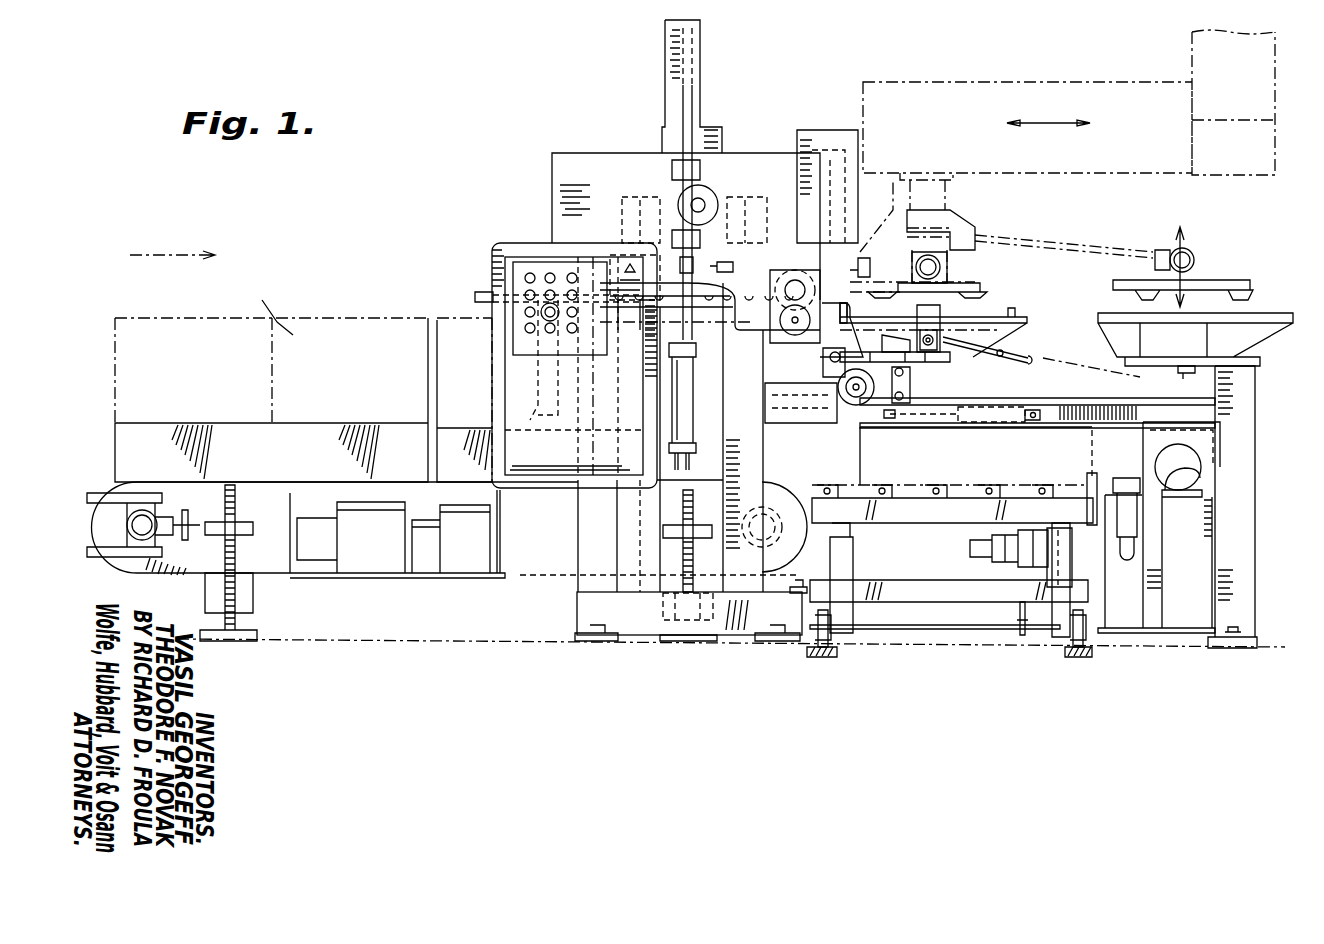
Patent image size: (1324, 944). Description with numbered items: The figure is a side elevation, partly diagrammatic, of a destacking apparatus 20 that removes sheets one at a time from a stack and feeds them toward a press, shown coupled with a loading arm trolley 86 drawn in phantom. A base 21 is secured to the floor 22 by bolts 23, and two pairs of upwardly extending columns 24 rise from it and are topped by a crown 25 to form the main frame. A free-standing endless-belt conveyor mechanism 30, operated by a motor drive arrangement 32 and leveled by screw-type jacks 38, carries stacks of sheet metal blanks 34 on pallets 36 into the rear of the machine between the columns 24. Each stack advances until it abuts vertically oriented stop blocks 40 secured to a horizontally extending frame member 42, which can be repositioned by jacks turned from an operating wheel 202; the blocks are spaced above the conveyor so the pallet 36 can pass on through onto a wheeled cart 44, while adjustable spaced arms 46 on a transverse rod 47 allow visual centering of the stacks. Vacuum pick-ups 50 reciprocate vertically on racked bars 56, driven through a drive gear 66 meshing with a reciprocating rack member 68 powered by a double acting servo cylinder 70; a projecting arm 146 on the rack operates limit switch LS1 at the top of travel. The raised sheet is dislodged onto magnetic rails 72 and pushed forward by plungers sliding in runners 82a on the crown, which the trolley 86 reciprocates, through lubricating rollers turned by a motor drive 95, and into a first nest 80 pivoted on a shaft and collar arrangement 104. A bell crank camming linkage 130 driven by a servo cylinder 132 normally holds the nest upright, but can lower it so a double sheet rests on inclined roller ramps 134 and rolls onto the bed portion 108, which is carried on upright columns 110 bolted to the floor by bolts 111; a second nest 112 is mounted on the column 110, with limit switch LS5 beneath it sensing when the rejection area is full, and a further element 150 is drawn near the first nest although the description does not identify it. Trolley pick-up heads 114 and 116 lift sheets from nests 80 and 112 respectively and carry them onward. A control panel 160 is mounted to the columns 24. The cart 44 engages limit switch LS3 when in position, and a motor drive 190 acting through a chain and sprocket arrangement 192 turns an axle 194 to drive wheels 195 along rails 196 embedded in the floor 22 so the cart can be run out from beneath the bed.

The destacking apparatus 20 is at (477, 234).
The base 21 is at (655, 645).
The floor 22 is at (568, 645).
The bolts 23 is at (592, 630).
The columns 24 is at (578, 515).
The crown 25 is at (753, 143).
The conveyor mechanism 30 is at (427, 594).
The motor drive arrangement 32 is at (355, 582).
The stacks of sheet metal blanks 34 is at (714, 406).
The pallets 36 is at (190, 428).
The screw-type jacks 38 is at (683, 545).
The stop blocks 40 is at (780, 425).
The frame member 42 is at (852, 408).
The wheeled cart 44 is at (914, 610).
The adjustable spaced arms 46 is at (574, 366).
The transverse rod 47 is at (530, 337).
The vacuum pick-ups 50 is at (628, 262).
The bars 56 is at (668, 92).
The drive gear 66 is at (706, 203).
The reciprocating rack member 68 is at (683, 150).
The double acting servo cylinder 70 is at (672, 397).
The magnetic rails 72 is at (694, 318).
The first nest 80 is at (1033, 312).
The runners 82a is at (483, 292).
The loading arm trolley 86 is at (1032, 88).
The motor drive 95 is at (872, 182).
The shaft and collar arrangement 104 is at (830, 360).
The bed portion 108 is at (1023, 402).
The upright columns 110 is at (1243, 452).
The bolts 111 is at (1240, 628).
The second nest 112 is at (1268, 308).
The vacuum pick-up head 114 is at (978, 283).
The vacuum pick-up head 116 is at (1218, 278).
The bell crank camming linkage 130 is at (905, 378).
The servo cylinder 132 is at (978, 418).
The inclined roller ramps 134 is at (1030, 357).
The projecting arm 146 is at (695, 262).
The stop block 150 is at (943, 337).
The control panel 160 is at (542, 249).
The motor drive 190 is at (962, 561).
The chain and sprocket arrangement 192 is at (1022, 632).
The axle 194 is at (982, 622).
The wheels 195 is at (832, 645).
The rails 196 is at (820, 660).
The operating wheel 202 is at (862, 393).
The limit switch LS1 is at (740, 264).
The limit switch LS3 is at (797, 587).
The limit switch LS5 is at (1185, 366).